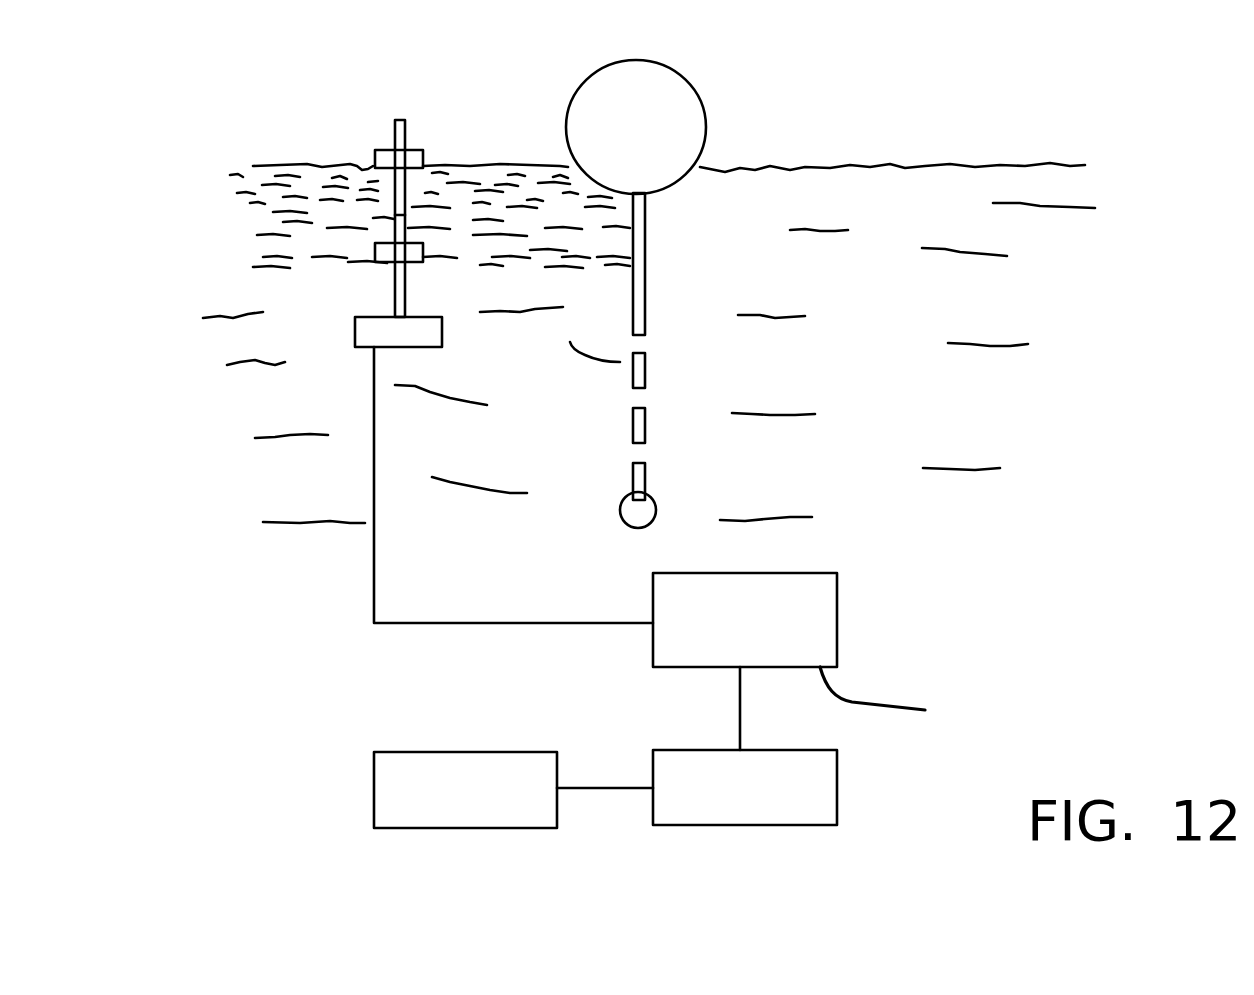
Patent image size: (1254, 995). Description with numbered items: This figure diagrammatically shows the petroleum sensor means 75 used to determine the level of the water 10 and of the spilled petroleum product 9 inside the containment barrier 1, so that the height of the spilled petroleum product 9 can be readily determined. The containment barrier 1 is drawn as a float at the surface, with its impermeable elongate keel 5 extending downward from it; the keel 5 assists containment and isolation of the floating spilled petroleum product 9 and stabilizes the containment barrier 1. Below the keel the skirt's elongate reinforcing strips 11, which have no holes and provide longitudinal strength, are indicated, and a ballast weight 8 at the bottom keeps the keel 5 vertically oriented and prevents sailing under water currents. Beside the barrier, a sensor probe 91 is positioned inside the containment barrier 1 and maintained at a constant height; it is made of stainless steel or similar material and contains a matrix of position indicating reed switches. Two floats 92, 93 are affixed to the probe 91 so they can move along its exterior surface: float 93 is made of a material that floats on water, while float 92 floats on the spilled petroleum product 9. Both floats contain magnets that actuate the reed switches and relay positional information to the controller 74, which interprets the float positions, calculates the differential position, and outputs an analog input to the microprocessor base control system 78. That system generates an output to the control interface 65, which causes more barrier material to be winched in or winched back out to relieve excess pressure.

The containment barrier 1 is at (703, 100).
The keel 5 is at (645, 277).
The ballast weights 8 is at (652, 500).
The spilled petroleum product 9 is at (322, 165).
The water 10 is at (250, 298).
The reinforcing strips 11 is at (645, 425).
The control interface 65 is at (408, 793).
The controller 74 is at (793, 617).
The petroleum sensor means 75 is at (895, 699).
The microprocessor base control system 78 is at (798, 795).
The sensor probe 91 is at (403, 120).
The float 92 is at (408, 162).
The float 93 is at (390, 255).